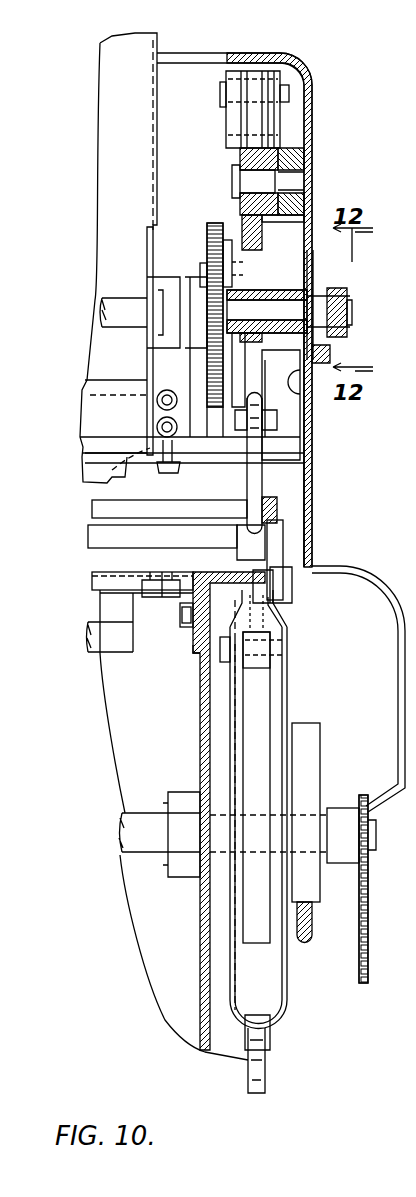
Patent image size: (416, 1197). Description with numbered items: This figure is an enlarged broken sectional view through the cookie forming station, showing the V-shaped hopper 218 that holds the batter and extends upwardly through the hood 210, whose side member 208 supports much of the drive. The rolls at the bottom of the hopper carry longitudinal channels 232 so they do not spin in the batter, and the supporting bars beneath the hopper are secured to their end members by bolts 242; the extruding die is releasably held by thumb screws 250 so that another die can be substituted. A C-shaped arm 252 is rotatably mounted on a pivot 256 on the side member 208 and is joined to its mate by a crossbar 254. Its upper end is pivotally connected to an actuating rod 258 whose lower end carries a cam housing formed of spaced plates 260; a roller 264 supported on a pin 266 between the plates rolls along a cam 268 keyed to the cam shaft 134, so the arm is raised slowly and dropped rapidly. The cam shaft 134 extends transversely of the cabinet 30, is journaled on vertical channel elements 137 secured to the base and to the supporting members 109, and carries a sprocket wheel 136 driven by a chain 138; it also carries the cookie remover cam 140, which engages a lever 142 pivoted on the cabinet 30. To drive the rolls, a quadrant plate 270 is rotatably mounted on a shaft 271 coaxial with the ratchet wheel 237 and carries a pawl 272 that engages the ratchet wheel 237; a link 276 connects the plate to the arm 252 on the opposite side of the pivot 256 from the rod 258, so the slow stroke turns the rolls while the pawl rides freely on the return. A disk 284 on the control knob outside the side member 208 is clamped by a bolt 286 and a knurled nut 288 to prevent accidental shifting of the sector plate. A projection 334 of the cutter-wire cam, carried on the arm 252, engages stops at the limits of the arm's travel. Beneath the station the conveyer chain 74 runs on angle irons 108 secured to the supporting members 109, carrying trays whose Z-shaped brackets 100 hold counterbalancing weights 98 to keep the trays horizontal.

The V-shaped hopper 218 is at (171, 41).
The hood 210 is at (298, 50).
The side member of the hood 208 is at (309, 122).
The C-shaped arm 252 is at (250, 116).
The actuating rod 258 is at (277, 118).
The pivot 256 is at (243, 181).
The pawl 272 is at (232, 240).
The shaft 271 is at (272, 308).
The disk 284 is at (313, 258).
The ratchet wheel 237 is at (208, 362).
The link 276 is at (278, 366).
The bolt 286 is at (302, 380).
The knurled nut 288 is at (322, 349).
The quadrant plate 270 is at (242, 402).
The bolts 242 is at (157, 427).
The channels of the rolls 232 is at (285, 540).
The thumb screws 250 is at (181, 468).
The crossbar 254 is at (132, 506).
The chain 74 is at (188, 574).
The cabinet 30 is at (372, 580).
The channel element 137 is at (205, 725).
The supporting member 109 is at (198, 654).
The Z-shaped bracket 100 is at (133, 612).
The counterbalancing weight 98 is at (92, 640).
The angle iron 108 is at (160, 604).
The cam housing plates 260 is at (286, 704).
The projection of the cam 334 is at (290, 610).
The cam 268 is at (252, 746).
The roller 264 is at (262, 670).
The pin 266 is at (228, 665).
The cookie remover cam 140 is at (318, 738).
The lever 142 is at (303, 945).
The sprocket wheel 136 is at (342, 810).
The chain 138 is at (368, 925).
The cam shaft 134 is at (148, 857).